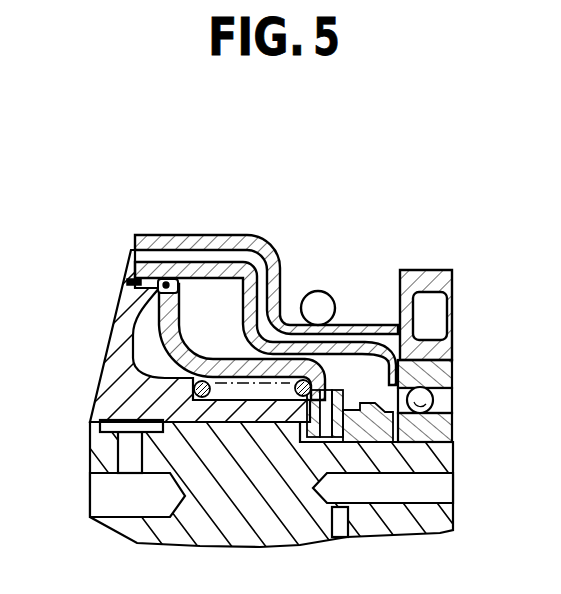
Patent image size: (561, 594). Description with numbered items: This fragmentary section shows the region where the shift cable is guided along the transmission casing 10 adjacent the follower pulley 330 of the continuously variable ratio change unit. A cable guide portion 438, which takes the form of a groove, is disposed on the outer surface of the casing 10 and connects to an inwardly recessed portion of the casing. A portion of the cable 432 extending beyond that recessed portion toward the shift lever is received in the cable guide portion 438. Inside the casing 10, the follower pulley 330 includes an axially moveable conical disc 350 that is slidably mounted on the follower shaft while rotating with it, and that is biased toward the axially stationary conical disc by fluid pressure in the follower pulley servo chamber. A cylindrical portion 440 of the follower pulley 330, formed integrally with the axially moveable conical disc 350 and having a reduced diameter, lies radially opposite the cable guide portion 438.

The casing 10 is at (257, 233).
The follower pulley 330 is at (177, 262).
The axially moveable conical disc 350 is at (210, 263).
The cable 432 is at (323, 283).
The cable guide portion 438 is at (363, 290).
The cylindrical portion 440 is at (382, 295).